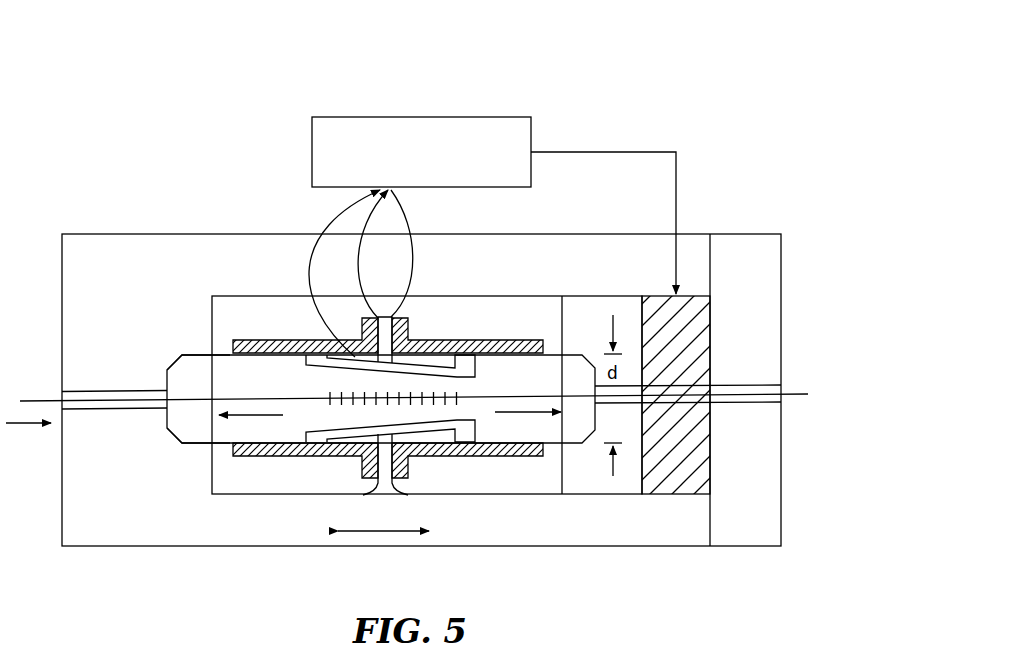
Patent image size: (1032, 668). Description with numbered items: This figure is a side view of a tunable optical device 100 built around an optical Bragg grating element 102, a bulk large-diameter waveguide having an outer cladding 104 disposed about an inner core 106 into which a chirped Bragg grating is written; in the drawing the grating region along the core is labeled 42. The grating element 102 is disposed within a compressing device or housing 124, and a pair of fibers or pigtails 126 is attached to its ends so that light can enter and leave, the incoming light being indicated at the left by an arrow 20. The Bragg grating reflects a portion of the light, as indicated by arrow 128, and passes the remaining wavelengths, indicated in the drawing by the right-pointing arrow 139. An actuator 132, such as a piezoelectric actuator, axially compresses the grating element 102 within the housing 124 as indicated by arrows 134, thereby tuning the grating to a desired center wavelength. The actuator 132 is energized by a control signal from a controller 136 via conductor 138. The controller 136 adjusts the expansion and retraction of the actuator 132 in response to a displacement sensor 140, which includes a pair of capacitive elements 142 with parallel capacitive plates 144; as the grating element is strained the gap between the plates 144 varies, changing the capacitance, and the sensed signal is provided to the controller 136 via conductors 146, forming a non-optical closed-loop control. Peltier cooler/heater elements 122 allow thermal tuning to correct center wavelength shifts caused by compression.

The tunable optical device 100 is at (679, 75).
The compressing device or housing 124 is at (150, 231).
The displacement sensor 140 is at (424, 306).
The actuator 132 is at (700, 335).
The controller 136 is at (484, 108).
The conductor 138 is at (677, 181).
The conductors 146 is at (362, 225).
The optical Bragg grating element 102 is at (186, 351).
The outer cladding 104 is at (186, 434).
The inner core 106 is at (200, 395).
The capacitive elements 142 is at (272, 339).
The peltier (TEC) cooler/heater elements 122 is at (342, 458).
The capacitive plates 144 is at (372, 489).
The arrows indicating axial compression 134 is at (380, 534).
The fibers or pigtails 126 is at (43, 391).
The fiber grating 42 is at (424, 389).
The arrow indicating reflected light 128 is at (251, 417).
The tension direction arrow (right) 139 is at (520, 415).
The input optical signal 20 is at (24, 428).